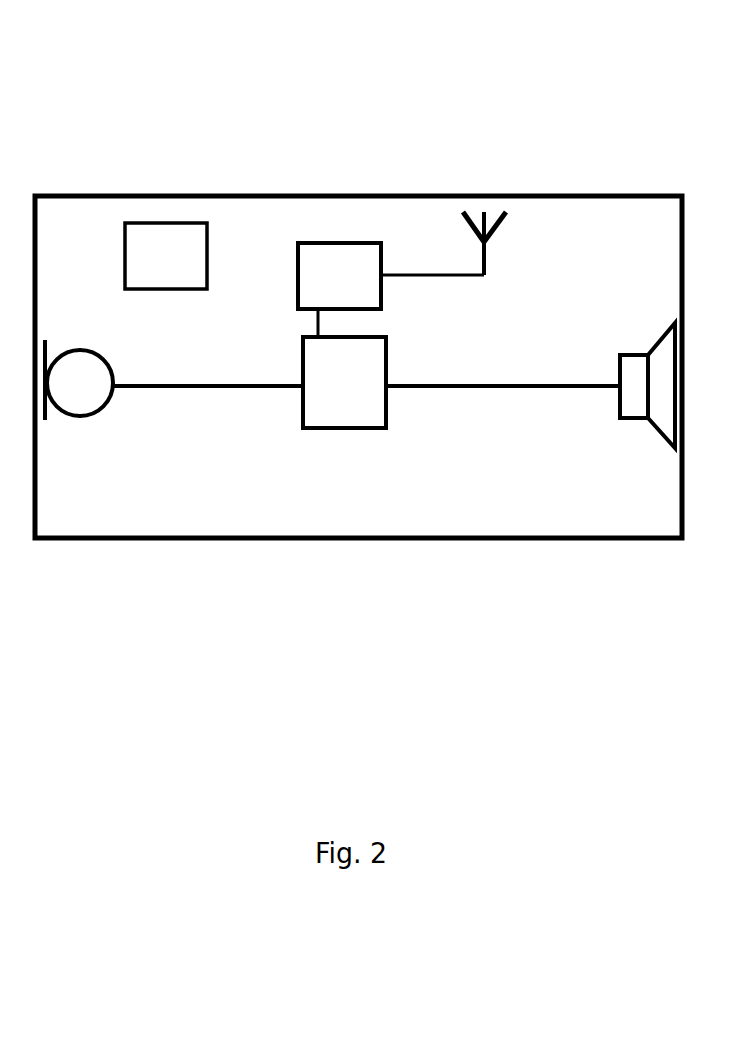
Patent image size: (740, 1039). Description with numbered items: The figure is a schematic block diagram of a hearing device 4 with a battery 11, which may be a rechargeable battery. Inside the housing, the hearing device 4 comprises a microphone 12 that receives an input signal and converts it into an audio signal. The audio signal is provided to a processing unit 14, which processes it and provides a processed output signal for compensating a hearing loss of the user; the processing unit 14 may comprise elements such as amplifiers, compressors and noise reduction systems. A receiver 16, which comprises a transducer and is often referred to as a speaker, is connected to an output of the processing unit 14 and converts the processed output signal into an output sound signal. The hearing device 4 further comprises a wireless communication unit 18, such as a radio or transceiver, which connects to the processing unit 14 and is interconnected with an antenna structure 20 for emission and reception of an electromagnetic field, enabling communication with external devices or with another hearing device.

The hearing device 4 is at (538, 582).
The battery 11 is at (170, 223).
The microphone 12 is at (76, 398).
The processing unit 14 is at (331, 410).
The receiver 16 is at (637, 408).
The wireless communication unit 18 is at (351, 240).
The antenna structure 20 is at (478, 212).